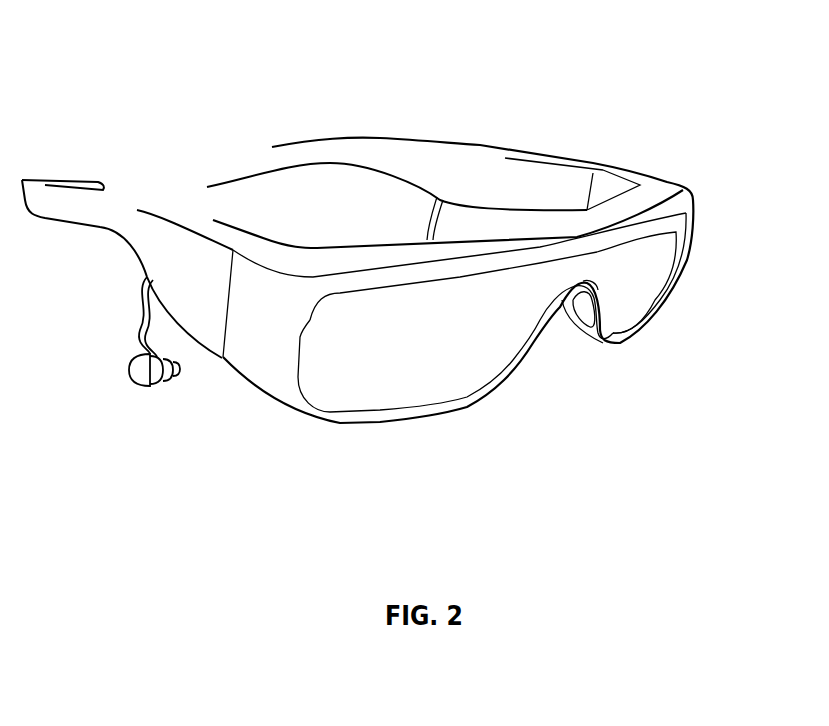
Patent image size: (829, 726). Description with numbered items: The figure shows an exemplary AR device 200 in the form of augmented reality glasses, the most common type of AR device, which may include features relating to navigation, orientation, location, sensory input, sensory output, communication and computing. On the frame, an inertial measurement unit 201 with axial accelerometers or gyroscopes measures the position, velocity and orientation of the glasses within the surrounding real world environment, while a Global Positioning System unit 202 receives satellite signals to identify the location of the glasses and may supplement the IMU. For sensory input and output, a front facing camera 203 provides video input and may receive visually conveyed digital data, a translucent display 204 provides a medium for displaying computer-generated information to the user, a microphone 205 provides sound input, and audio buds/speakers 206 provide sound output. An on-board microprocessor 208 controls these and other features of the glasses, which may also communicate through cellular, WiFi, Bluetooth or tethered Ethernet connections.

The AR device 200 is at (794, 13).
The inertial measurement unit 201 is at (267, 367).
The Global Positioning System unit 202 is at (707, 189).
The front facing camera 203 is at (578, 268).
The display 204 is at (412, 400).
The microphone 205 is at (597, 252).
The audio buds/speakers 206 is at (122, 383).
The on-board microprocessor 208 is at (530, 177).